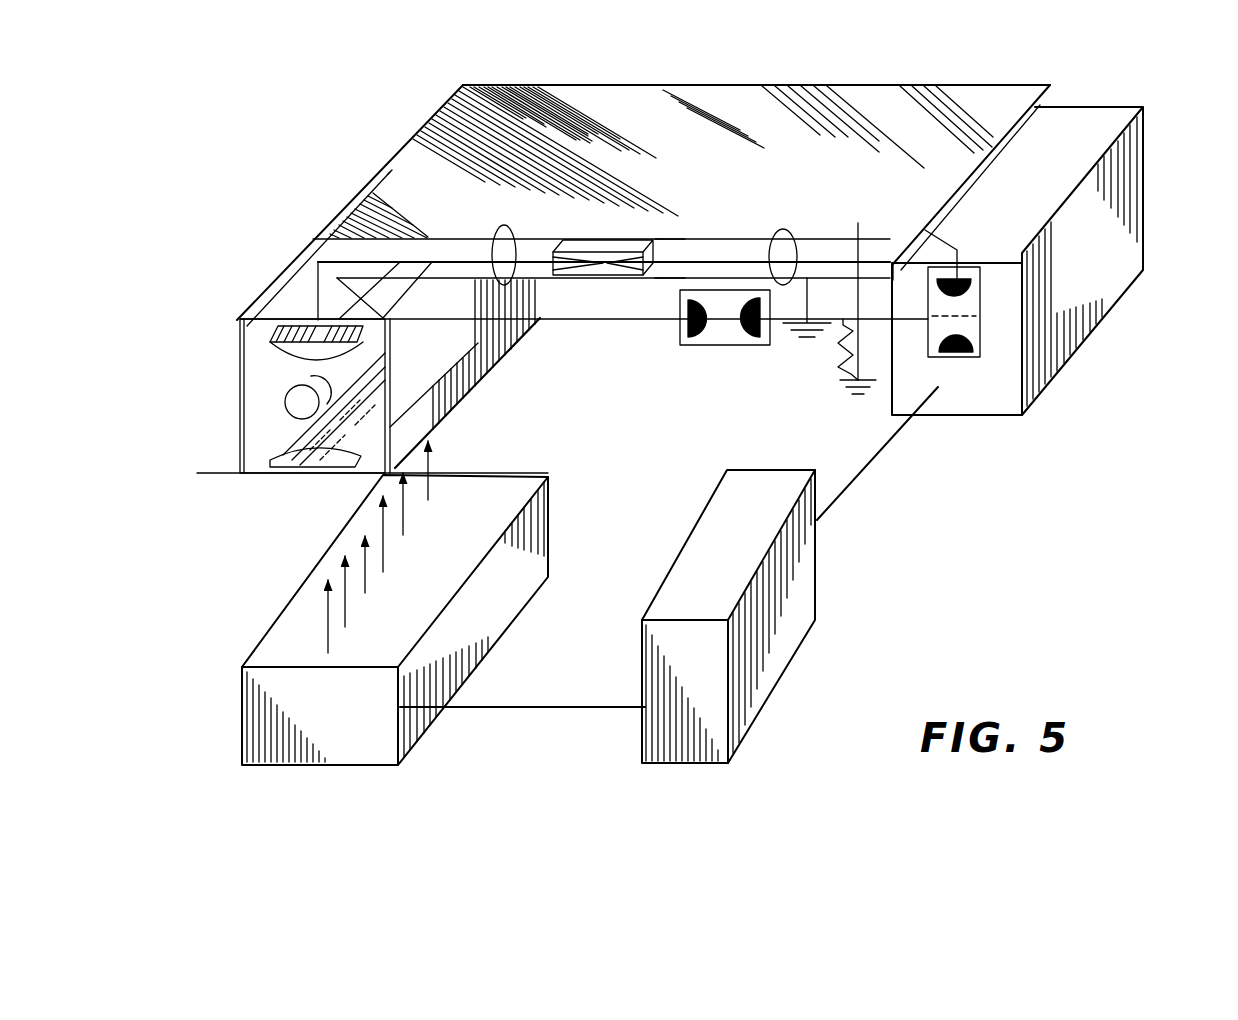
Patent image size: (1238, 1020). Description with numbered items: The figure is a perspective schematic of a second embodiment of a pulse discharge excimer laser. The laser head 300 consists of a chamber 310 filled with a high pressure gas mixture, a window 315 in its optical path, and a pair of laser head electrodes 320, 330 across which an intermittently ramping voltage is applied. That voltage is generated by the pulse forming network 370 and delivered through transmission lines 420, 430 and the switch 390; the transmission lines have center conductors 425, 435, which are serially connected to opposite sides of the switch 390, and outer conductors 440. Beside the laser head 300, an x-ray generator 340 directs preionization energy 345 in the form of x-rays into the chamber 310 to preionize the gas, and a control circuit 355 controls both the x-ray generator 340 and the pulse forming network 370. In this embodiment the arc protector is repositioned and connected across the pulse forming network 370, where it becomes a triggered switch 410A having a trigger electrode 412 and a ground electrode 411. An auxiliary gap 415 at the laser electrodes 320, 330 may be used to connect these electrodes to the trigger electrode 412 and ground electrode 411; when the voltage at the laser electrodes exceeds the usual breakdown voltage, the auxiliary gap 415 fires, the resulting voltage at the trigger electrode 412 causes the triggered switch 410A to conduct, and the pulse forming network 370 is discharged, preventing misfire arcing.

The laser head 300 is at (284, 262).
The chamber 310 is at (238, 352).
The window 315 is at (284, 421).
The laser head electrode 320 is at (281, 361).
The laser head electrode 330 is at (303, 477).
The x-ray generator 340 is at (358, 768).
The preionization energy 345 is at (380, 577).
The control circuit 355 is at (797, 615).
The pulse forming network 370 is at (1090, 304).
The switch 390 is at (600, 282).
The triggered switch 410A is at (923, 360).
The ground electrode 411 is at (967, 310).
The trigger electrode 412 is at (972, 351).
The auxiliary gap 415 is at (753, 348).
The transmission line 420 is at (517, 233).
The center conductor 425 is at (447, 258).
The transmission line 430 is at (789, 228).
The center conductor 435 is at (706, 250).
The outer conductors 440 is at (678, 242).